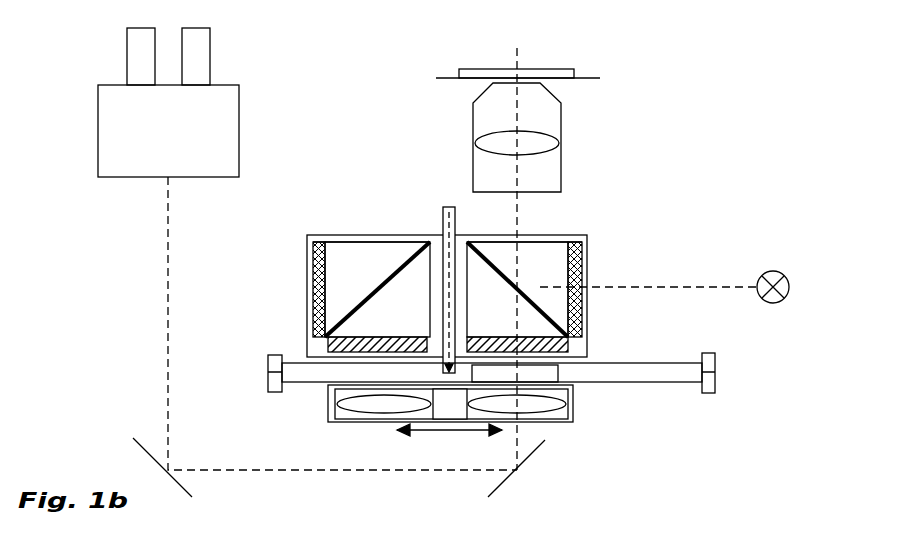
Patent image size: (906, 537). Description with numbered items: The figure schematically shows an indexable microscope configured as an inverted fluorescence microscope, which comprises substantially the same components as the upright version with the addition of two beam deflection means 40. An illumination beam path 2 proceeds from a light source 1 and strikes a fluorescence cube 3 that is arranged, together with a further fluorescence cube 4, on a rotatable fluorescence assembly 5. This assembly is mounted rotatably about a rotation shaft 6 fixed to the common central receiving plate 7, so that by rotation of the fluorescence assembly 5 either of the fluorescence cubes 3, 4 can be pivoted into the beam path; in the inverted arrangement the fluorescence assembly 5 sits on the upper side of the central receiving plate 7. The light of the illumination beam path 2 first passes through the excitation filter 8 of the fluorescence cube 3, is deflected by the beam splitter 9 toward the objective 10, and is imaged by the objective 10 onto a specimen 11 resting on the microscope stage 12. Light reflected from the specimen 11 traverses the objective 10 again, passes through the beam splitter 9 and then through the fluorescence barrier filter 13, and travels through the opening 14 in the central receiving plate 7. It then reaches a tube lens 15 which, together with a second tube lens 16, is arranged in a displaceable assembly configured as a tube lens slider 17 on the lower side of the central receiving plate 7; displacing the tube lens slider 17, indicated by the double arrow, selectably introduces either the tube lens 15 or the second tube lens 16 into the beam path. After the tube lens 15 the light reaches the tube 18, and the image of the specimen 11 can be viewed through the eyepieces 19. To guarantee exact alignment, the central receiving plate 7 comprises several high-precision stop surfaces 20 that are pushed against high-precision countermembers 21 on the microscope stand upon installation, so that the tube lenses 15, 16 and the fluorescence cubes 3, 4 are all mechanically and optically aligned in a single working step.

The light source 1 is at (773, 300).
The illumination beam path 2 is at (697, 288).
The fluorescence cube 3 is at (535, 257).
The further fluorescence cube 4 is at (348, 278).
The rotatable fluorescence assembly 5 is at (320, 236).
The rotation shaft 6 is at (447, 205).
The central receiving plate 7 is at (648, 373).
The excitation filter 8 is at (580, 327).
The beam splitter 9 is at (540, 287).
The objective 10 is at (487, 120).
The specimen 11 is at (558, 65).
The microscope stage 12 is at (575, 78).
The fluorescence barrier filter 13 is at (580, 338).
The opening 14 is at (558, 370).
The tube lens 15 is at (332, 422).
The second tube lens 16 is at (535, 408).
The tube lens slider 17 is at (570, 402).
The tube 18 is at (232, 127).
The eyepieces 19 is at (205, 52).
The stop surfaces 20 is at (283, 353).
The countermembers 21 is at (268, 383).
The beam deflection means 40 is at (147, 450).